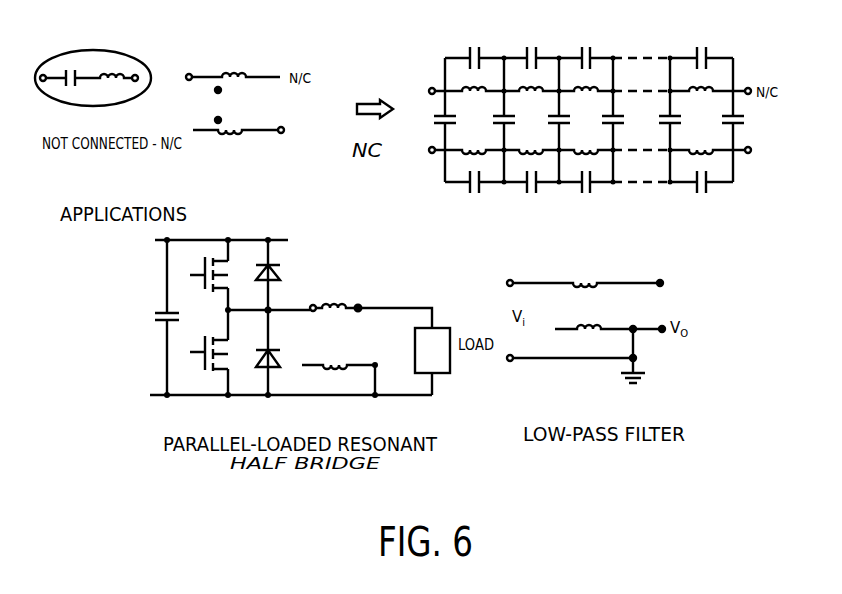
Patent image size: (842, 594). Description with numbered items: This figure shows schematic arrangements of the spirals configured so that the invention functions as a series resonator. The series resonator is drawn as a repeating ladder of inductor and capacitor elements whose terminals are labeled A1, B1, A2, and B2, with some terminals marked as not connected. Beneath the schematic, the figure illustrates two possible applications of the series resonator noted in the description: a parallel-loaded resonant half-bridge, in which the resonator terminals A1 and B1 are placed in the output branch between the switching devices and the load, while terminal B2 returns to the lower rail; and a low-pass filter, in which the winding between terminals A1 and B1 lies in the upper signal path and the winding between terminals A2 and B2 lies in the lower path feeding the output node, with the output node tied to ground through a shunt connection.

The terminal A1 of resonant inductor-capacitor module A1 is at (313, 305).
The terminal B1 of resonant inductor-capacitor module B1 is at (360, 306).
The terminal A2 of second winding A2 is at (412, 162).
The terminal B2 of second winding B2 is at (532, 244).